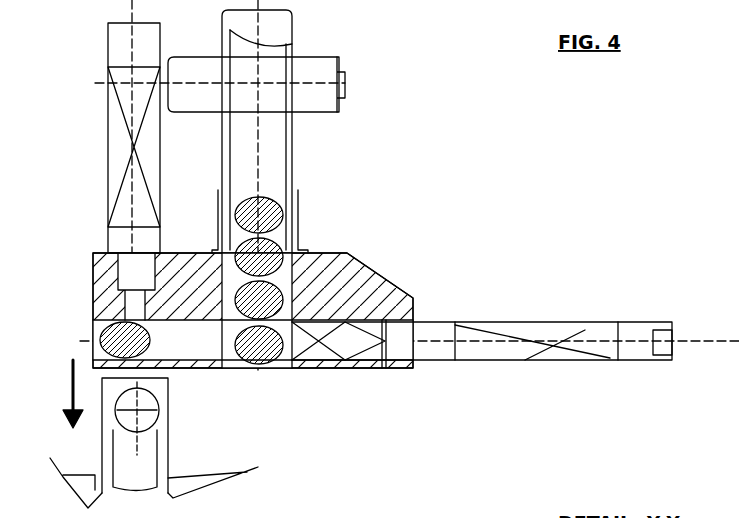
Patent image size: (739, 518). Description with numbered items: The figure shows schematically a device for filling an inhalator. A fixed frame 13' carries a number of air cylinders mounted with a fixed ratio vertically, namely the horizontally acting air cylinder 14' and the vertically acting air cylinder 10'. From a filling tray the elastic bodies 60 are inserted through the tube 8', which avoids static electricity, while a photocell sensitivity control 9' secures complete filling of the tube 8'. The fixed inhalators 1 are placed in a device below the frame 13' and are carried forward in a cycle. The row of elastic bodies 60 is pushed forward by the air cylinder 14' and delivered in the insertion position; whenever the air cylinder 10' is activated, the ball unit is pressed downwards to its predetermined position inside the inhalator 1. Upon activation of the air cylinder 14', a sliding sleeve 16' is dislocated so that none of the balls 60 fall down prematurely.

The air cylinder 10' is at (99, 132).
The tube 8' is at (288, 187).
The photocell sensitivity control 9' is at (268, 73).
The elastic bodies 60 is at (265, 195).
The fixed frame 13' is at (270, 308).
The air cylinder 14' is at (482, 370).
The sliding sleeve 16' is at (338, 379).
The inhalator 1 is at (160, 440).